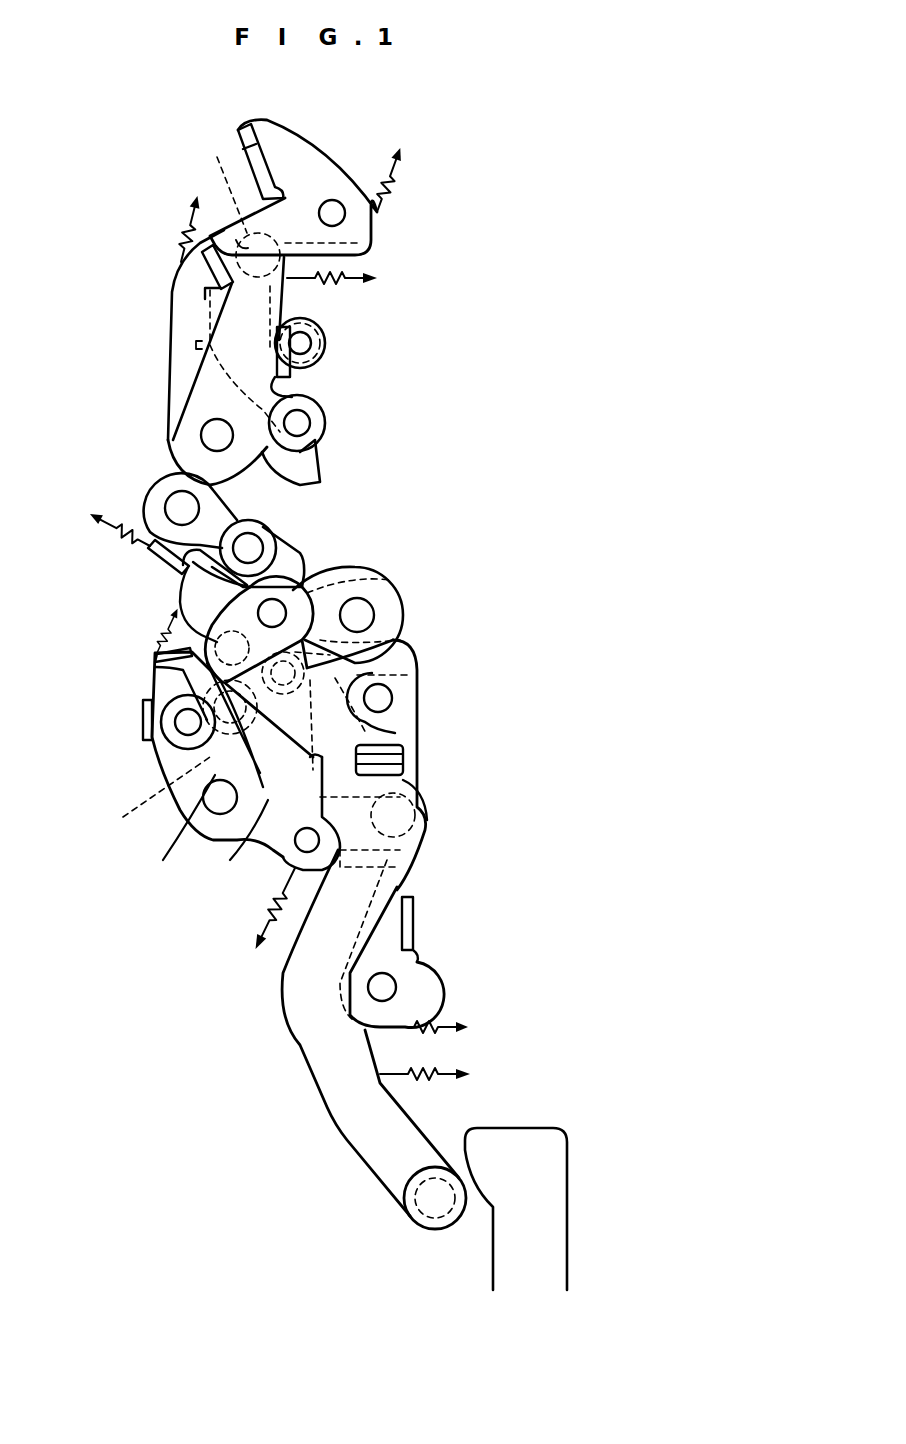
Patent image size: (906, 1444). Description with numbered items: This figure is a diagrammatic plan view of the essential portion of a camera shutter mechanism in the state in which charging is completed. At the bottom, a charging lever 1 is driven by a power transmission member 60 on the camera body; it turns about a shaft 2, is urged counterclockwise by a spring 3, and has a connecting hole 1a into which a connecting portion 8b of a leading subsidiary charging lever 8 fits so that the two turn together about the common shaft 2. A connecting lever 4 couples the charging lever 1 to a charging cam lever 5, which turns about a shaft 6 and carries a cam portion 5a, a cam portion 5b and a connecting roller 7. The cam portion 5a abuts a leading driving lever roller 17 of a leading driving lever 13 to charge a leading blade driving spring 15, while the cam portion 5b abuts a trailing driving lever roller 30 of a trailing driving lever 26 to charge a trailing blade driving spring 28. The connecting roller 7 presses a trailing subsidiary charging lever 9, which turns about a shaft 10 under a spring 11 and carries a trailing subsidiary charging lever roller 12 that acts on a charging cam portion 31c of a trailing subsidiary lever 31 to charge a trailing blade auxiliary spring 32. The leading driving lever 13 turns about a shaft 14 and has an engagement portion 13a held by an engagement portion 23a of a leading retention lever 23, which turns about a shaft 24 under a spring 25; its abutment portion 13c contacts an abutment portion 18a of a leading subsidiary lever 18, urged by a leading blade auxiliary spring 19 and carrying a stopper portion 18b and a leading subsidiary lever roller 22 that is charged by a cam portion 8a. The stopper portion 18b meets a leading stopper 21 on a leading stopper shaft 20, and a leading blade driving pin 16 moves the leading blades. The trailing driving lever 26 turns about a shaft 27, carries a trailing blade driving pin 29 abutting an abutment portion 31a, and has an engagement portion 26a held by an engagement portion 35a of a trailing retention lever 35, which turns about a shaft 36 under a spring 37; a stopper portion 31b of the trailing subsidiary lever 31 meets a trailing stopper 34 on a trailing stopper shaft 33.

The charging lever 1 is at (380, 1162).
The connecting hole 1a is at (403, 755).
The shaft 2 is at (385, 702).
The spring 3 is at (432, 1078).
The connecting lever 4 is at (248, 622).
The charging cam lever 5 is at (398, 620).
The cam portion 5a is at (395, 737).
The cam portion 5b is at (180, 570).
The shaft 6 is at (375, 615).
The connecting roller 7 is at (398, 574).
The leading subsidiary charging lever 8 is at (290, 862).
The cam portion 8a is at (295, 846).
The connecting portion 8b is at (417, 748).
The trailing subsidiary charging lever 9 is at (293, 557).
The shaft 10 is at (180, 506).
The spring 11 is at (110, 533).
The trailing subsidiary charging lever roller 12 is at (263, 532).
The leading driving lever 13 is at (265, 843).
The engagement portion 13a is at (400, 857).
The abutment portion 13c is at (160, 740).
The shaft 14 is at (215, 826).
The leading blade driving spring 15 is at (262, 938).
The leading blade driving pin 16 is at (420, 823).
The leading driving lever roller 17 is at (185, 748).
The leading subsidiary lever 18 is at (200, 780).
The abutment portion 18a is at (143, 718).
The stopper portion 18b is at (157, 657).
The leading blade auxiliary spring 19 is at (157, 635).
The leading stopper shaft 20 is at (400, 648).
The leading stopper 21 is at (390, 697).
The leading subsidiary lever roller 22 is at (210, 800).
The leading retention lever 23 is at (415, 972).
The engagement portion 23a is at (400, 873).
The shaft 24 is at (385, 987).
The spring 25 is at (438, 1030).
The trailing driving lever 26 is at (190, 413).
The engagement portion 26a is at (203, 272).
The shaft 27 is at (212, 440).
The trailing blade driving spring 28 is at (360, 282).
The trailing blade driving pin 29 is at (372, 256).
The trailing driving lever roller 30 is at (295, 425).
The trailing subsidiary lever 31 is at (175, 358).
The abutment portion 31a is at (237, 178).
The stopper portion 31b is at (213, 308).
The charging cam portion 31c is at (300, 484).
The trailing blade auxiliary spring 32 is at (182, 238).
The trailing stopper shaft 33 is at (325, 338).
The trailing stopper 34 is at (317, 345).
The trailing retention lever 35 is at (282, 143).
The engagement portion 35a is at (203, 227).
The shaft 36 is at (345, 213).
The spring 37 is at (405, 162).
The power transmission member 60 is at (535, 1135).